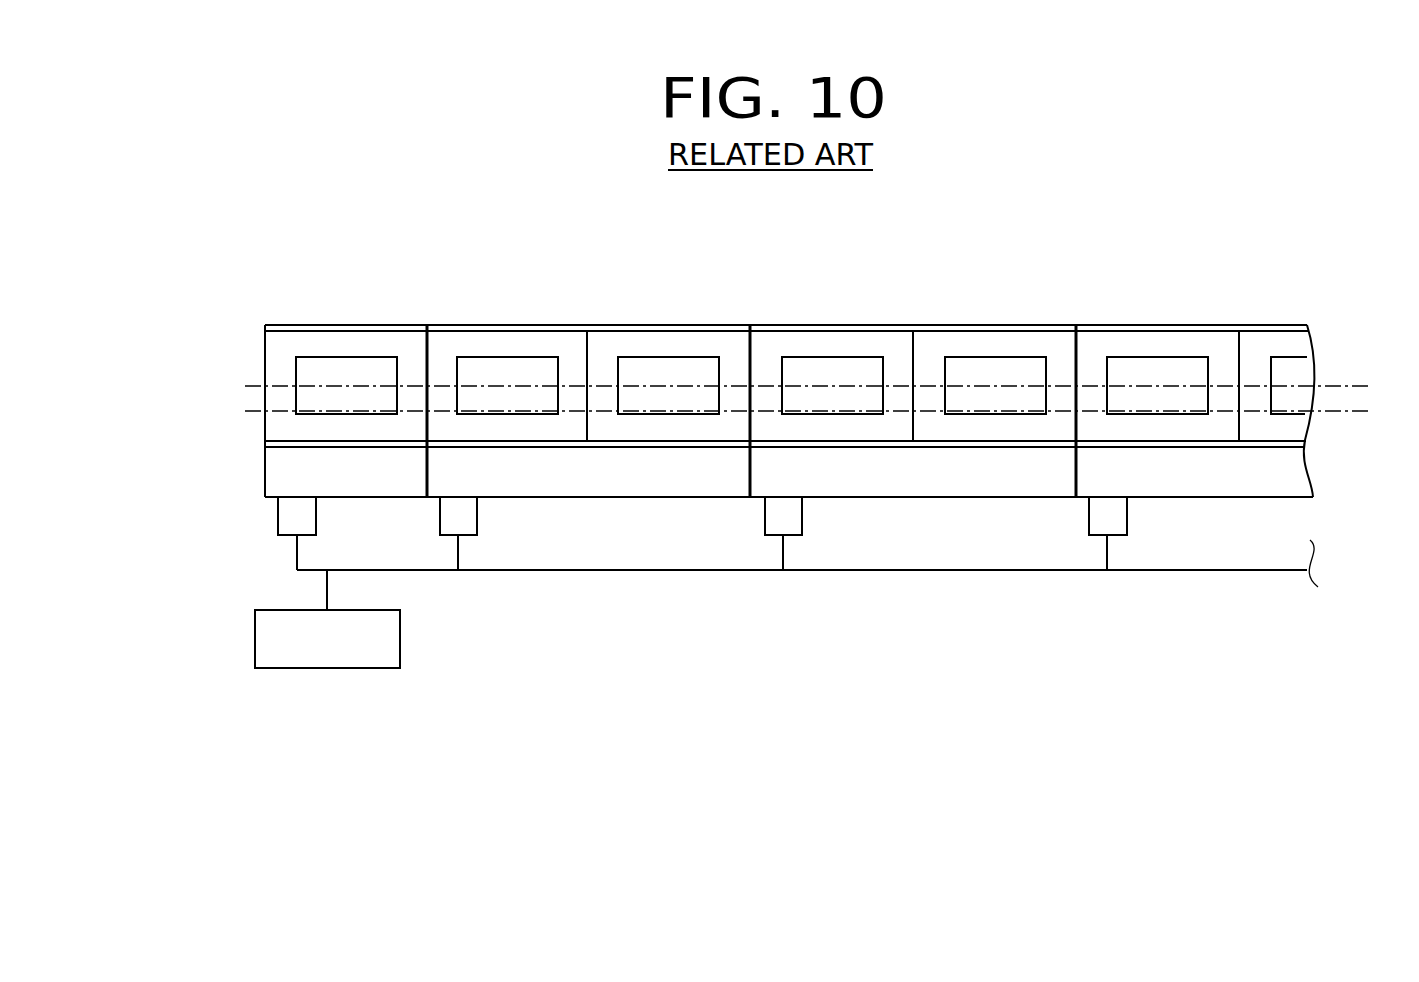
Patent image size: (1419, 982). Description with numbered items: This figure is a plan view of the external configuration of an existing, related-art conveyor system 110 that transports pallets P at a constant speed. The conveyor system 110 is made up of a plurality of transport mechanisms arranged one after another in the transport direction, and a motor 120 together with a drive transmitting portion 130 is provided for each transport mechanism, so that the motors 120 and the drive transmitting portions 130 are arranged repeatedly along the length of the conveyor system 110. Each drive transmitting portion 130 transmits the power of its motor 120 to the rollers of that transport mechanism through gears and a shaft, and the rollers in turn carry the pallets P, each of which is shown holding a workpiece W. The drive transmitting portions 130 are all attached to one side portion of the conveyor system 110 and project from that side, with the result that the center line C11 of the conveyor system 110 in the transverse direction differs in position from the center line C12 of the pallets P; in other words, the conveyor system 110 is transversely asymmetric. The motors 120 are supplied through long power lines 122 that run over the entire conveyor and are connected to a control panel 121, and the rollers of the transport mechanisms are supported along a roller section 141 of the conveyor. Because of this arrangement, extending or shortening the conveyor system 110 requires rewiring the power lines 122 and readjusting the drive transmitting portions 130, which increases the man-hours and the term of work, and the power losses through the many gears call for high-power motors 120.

The conveyor system 110 is at (267, 203).
The pallet P is at (347, 321).
The substrate W is at (380, 365).
The motor 120 is at (287, 520).
The control panel 121 is at (330, 653).
The power line 122 is at (737, 572).
The drive transmitting portion 130 is at (393, 524).
The guide rail 141 is at (1028, 572).
The center line of the conveyor system C11 is at (1357, 410).
The center line of pallets C12 is at (1342, 383).